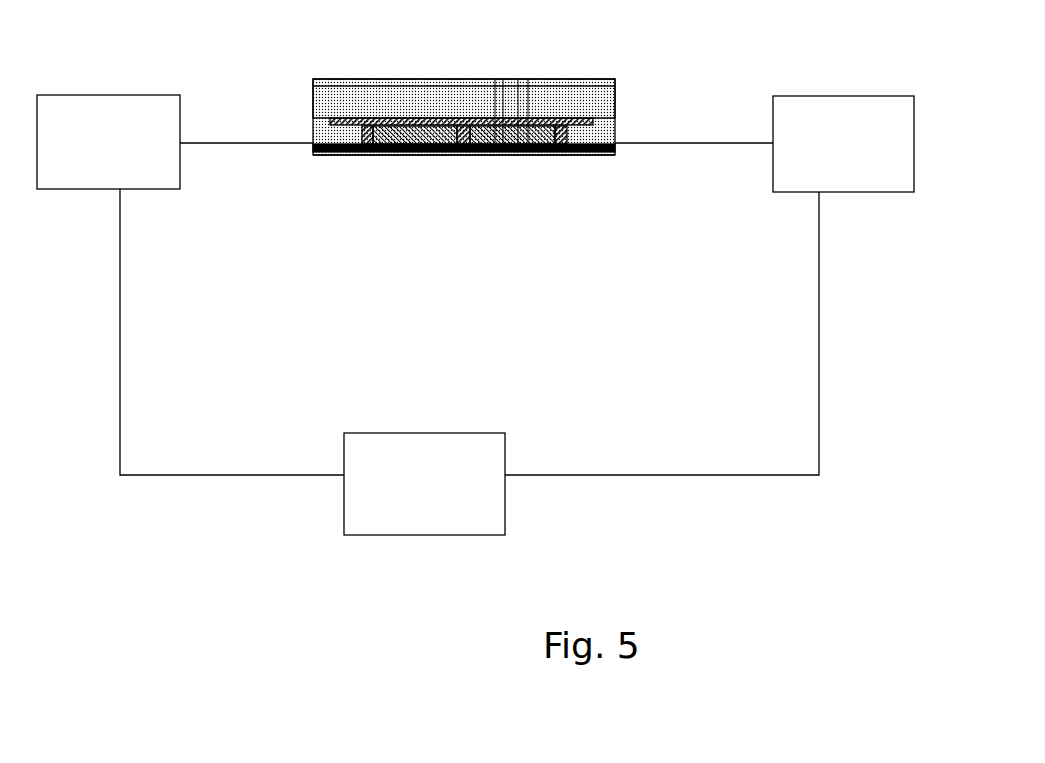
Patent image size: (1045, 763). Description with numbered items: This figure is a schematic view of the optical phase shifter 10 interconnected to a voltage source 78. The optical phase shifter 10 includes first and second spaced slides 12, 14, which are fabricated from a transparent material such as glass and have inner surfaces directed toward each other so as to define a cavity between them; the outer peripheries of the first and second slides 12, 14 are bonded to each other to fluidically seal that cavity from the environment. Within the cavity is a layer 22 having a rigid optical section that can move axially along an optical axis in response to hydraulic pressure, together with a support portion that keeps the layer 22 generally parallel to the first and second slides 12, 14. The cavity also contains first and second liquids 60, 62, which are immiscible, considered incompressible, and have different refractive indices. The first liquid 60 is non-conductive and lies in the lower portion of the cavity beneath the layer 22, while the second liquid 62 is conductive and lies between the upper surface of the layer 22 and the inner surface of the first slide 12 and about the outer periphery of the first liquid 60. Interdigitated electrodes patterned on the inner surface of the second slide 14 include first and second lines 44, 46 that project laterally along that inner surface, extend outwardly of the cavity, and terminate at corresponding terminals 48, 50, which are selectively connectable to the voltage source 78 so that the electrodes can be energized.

The optical phase shifter 10 is at (848, 284).
The first slide 12 is at (457, 116).
The second slide 14 is at (610, 153).
The layer 22 is at (333, 118).
The first line 44 is at (222, 143).
The second line 46 is at (721, 144).
The terminal 48 is at (118, 95).
The terminal 50 is at (824, 95).
The first liquid 60 is at (423, 145).
The second liquid 62 is at (606, 98).
The voltage source 78 is at (527, 80).